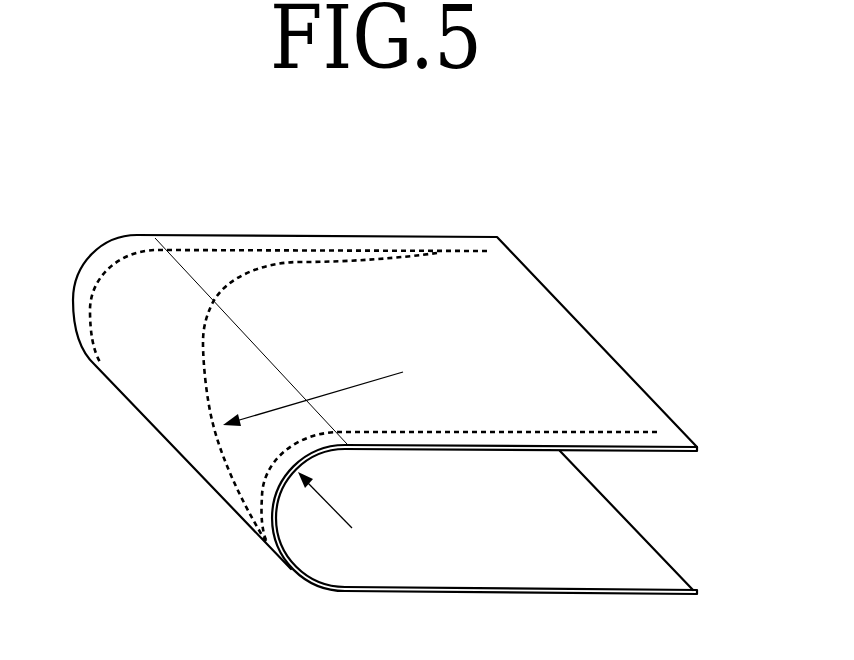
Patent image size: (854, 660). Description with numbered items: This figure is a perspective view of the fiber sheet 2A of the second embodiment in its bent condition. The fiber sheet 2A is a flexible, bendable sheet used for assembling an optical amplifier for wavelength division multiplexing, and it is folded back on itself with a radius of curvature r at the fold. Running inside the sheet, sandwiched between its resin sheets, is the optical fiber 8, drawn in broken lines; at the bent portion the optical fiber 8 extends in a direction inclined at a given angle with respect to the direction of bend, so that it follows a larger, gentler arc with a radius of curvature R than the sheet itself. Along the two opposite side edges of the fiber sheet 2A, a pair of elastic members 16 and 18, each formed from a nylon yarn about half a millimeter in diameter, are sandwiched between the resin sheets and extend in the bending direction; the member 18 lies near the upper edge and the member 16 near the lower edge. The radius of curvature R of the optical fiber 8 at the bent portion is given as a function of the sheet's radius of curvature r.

The fiber sheet 2A is at (548, 270).
The elastic member 18 is at (243, 251).
The optical fiber 8 is at (203, 360).
The elastic member 16 is at (540, 432).
The radius of curvature of the optical fiber R is at (313, 394).
The radius of curvature of the fiber sheet r is at (325, 500).